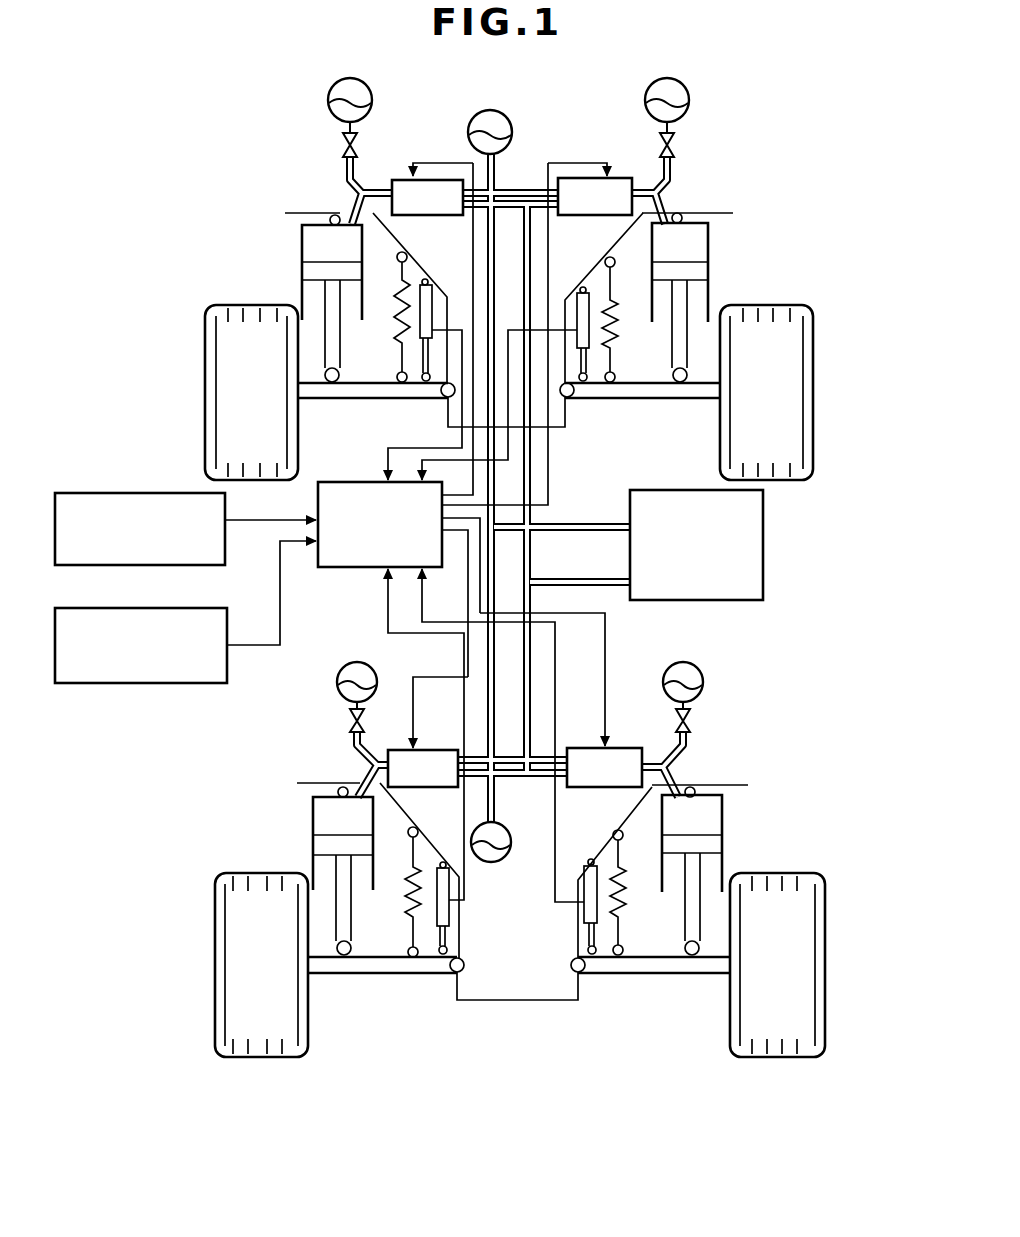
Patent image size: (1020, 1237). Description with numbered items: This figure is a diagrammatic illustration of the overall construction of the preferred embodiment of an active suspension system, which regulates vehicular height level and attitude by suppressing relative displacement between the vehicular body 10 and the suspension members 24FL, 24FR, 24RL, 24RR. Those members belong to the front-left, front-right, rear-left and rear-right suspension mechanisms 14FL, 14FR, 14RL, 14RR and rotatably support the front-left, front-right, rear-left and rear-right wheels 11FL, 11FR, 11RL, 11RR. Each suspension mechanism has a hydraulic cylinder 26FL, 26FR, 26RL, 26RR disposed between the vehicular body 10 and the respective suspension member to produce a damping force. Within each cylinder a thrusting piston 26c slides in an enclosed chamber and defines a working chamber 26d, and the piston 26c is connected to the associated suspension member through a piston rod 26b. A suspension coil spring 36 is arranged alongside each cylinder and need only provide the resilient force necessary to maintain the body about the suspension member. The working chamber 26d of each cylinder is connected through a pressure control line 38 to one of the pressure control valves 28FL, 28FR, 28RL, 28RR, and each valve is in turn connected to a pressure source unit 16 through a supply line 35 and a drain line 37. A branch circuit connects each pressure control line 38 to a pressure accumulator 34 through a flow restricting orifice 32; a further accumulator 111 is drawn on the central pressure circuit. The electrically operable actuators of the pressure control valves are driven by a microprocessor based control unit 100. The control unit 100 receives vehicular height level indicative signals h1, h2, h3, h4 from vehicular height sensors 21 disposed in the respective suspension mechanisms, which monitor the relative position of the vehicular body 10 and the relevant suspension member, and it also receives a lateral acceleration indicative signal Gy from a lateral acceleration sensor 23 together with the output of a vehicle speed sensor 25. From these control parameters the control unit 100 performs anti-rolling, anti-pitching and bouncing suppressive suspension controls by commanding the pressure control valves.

The vehicular body 10 is at (565, 430).
The front-left wheel 11FL is at (228, 368).
The front-right wheel 11FR is at (783, 348).
The rear-left wheel 11RL is at (238, 947).
The rear-right wheel 11RR is at (792, 1013).
The front-left suspension mechanism 14FL is at (300, 242).
The front-right suspension mechanism 14FR is at (712, 242).
The rear-left suspension mechanism 14RL is at (311, 822).
The rear-right suspension mechanism 14RR is at (730, 822).
The pressure source unit 16 is at (764, 520).
The vehicular height sensor 21 is at (437, 298).
The lateral acceleration sensor 23 is at (153, 493).
The front-left suspension member 24FL is at (390, 399).
The front-right suspension member 24FR is at (640, 399).
The rear-left suspension member 24RL is at (403, 974).
The rear-right suspension member 24RR is at (640, 974).
The vehicle speed sensor 25 is at (177, 687).
The front-left hydraulic cylinder 26FL is at (313, 223).
The front-right hydraulic cylinder 26FR is at (697, 223).
The rear-left hydraulic cylinder 26RL is at (323, 797).
The rear-right hydraulic cylinder 26RR is at (710, 788).
The piston rod 26b is at (327, 350).
The thrusting piston 26c is at (304, 297).
The working chamber 26d is at (363, 252).
The front-left pressure control valve 28FL is at (411, 163).
The front-right pressure control valve 28FR is at (619, 177).
The rear-left pressure control valve 28RL is at (392, 748).
The rear-right pressure control valve 28RR is at (630, 748).
The orifice 32 is at (341, 143).
The pressure accumulator 34 is at (366, 85).
The supply line 35 is at (582, 521).
The suspension coil spring 36 is at (397, 323).
The drain line 37 is at (582, 577).
The pressure control line 38 is at (360, 202).
The control unit 100 is at (350, 568).
The main accumulator 111 is at (506, 116).
The lateral acceleration indicative signal Gy is at (270, 507).
The vehicular height level indicative signal h1 is at (425, 405).
The vehicular height level indicative signal h2 is at (499, 412).
The vehicular height level indicative signal h3 is at (426, 734).
The vehicular height level indicative signal h4 is at (503, 735).